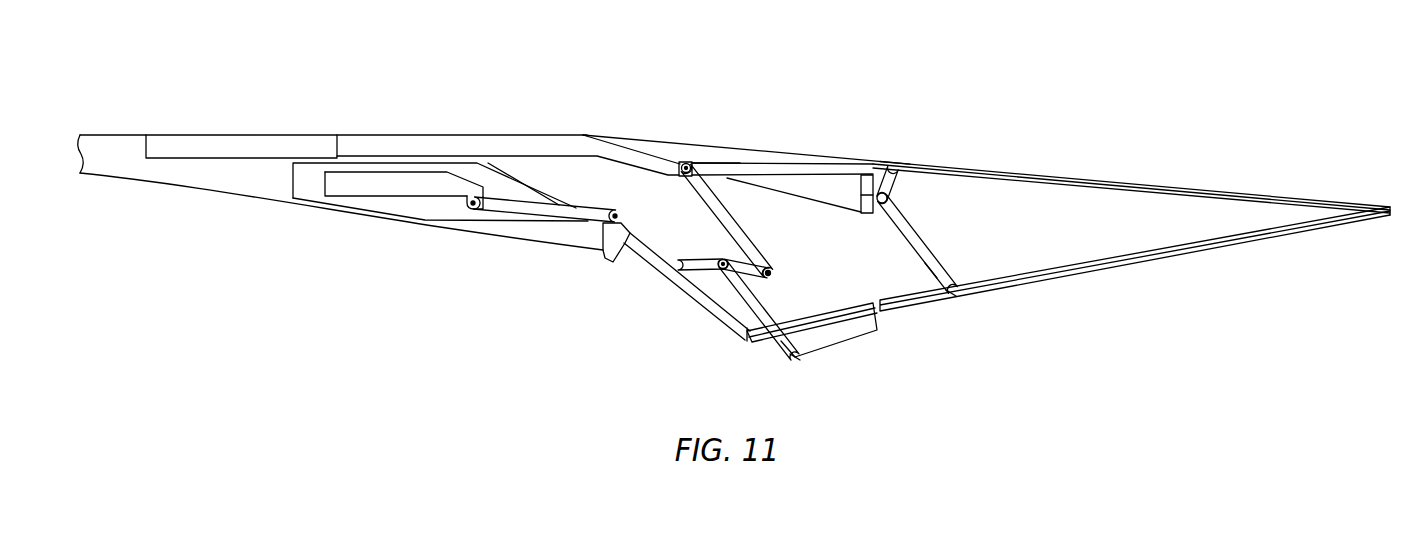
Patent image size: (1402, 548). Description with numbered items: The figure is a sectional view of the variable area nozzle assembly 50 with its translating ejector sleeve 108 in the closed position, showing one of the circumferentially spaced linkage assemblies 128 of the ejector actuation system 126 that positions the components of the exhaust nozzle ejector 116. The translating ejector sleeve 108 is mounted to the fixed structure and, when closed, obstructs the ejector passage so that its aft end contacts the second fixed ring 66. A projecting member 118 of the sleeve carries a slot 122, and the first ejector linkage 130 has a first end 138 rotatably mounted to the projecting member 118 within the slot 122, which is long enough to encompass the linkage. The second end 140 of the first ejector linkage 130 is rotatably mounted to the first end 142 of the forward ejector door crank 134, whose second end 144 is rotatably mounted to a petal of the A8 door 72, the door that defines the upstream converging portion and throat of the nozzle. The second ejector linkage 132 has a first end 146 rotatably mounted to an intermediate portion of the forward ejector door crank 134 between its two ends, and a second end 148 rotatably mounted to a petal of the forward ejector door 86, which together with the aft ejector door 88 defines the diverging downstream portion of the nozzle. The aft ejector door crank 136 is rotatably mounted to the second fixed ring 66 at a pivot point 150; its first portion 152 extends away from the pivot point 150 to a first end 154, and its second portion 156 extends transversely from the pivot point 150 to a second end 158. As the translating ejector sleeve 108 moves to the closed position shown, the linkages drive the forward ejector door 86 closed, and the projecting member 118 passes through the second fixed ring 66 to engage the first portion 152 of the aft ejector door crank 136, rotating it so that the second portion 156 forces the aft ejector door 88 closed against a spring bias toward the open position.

The variable area nozzle assembly 50 is at (1241, 112).
The second fixed ring 66 is at (712, 160).
The A8 door 72 is at (651, 298).
The forward ejector door 86 is at (878, 348).
The aft ejector door 88 is at (1150, 270).
The translating ejector sleeve 108 is at (477, 143).
The exhaust nozzle ejector 116 is at (739, 126).
The projecting member 118 is at (868, 171).
The slot 122 is at (784, 161).
The ejector actuation system 126 is at (646, 194).
The linkage assembly 128 is at (781, 207).
The first ejector linkage 130 is at (729, 206).
The second ejector linkage 132 is at (769, 300).
The forward ejector door crank 134 is at (697, 254).
The aft ejector door crank 136 is at (925, 242).
The first end 138 is at (686, 156).
The second end 140 is at (782, 264).
The first end 142 is at (780, 283).
The second end 144 is at (706, 280).
The first end 146 is at (718, 277).
The second end 148 is at (802, 369).
The pivot point 150 is at (899, 197).
The first portion 152 is at (906, 175).
The first end 154 is at (896, 161).
The second portion 156 is at (938, 263).
The second end 158 is at (960, 295).